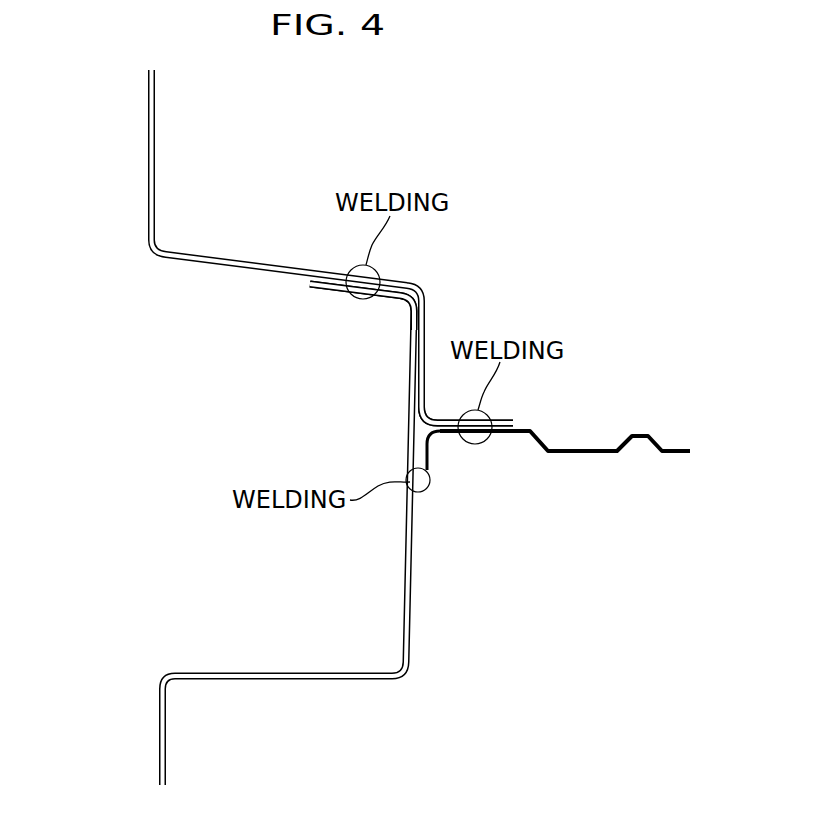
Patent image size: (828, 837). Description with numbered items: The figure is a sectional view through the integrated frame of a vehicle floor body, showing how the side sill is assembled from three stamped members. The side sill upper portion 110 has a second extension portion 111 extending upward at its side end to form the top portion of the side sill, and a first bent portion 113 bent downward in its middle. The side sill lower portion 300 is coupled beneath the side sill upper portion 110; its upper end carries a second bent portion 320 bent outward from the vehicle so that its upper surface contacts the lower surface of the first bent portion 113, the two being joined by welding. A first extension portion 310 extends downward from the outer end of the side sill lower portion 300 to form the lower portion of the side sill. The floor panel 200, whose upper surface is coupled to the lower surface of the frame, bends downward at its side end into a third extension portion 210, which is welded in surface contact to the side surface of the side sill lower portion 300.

The side sill upper portion 110 is at (176, 242).
The second extension portion 111 is at (148, 148).
The first bent portion 113 is at (418, 292).
The floor panel 200 is at (618, 460).
The third extension portion 210 is at (428, 445).
The side sill lower portion 300 is at (345, 688).
The first extension portion 310 is at (158, 745).
The second bent portion 320 is at (404, 300).